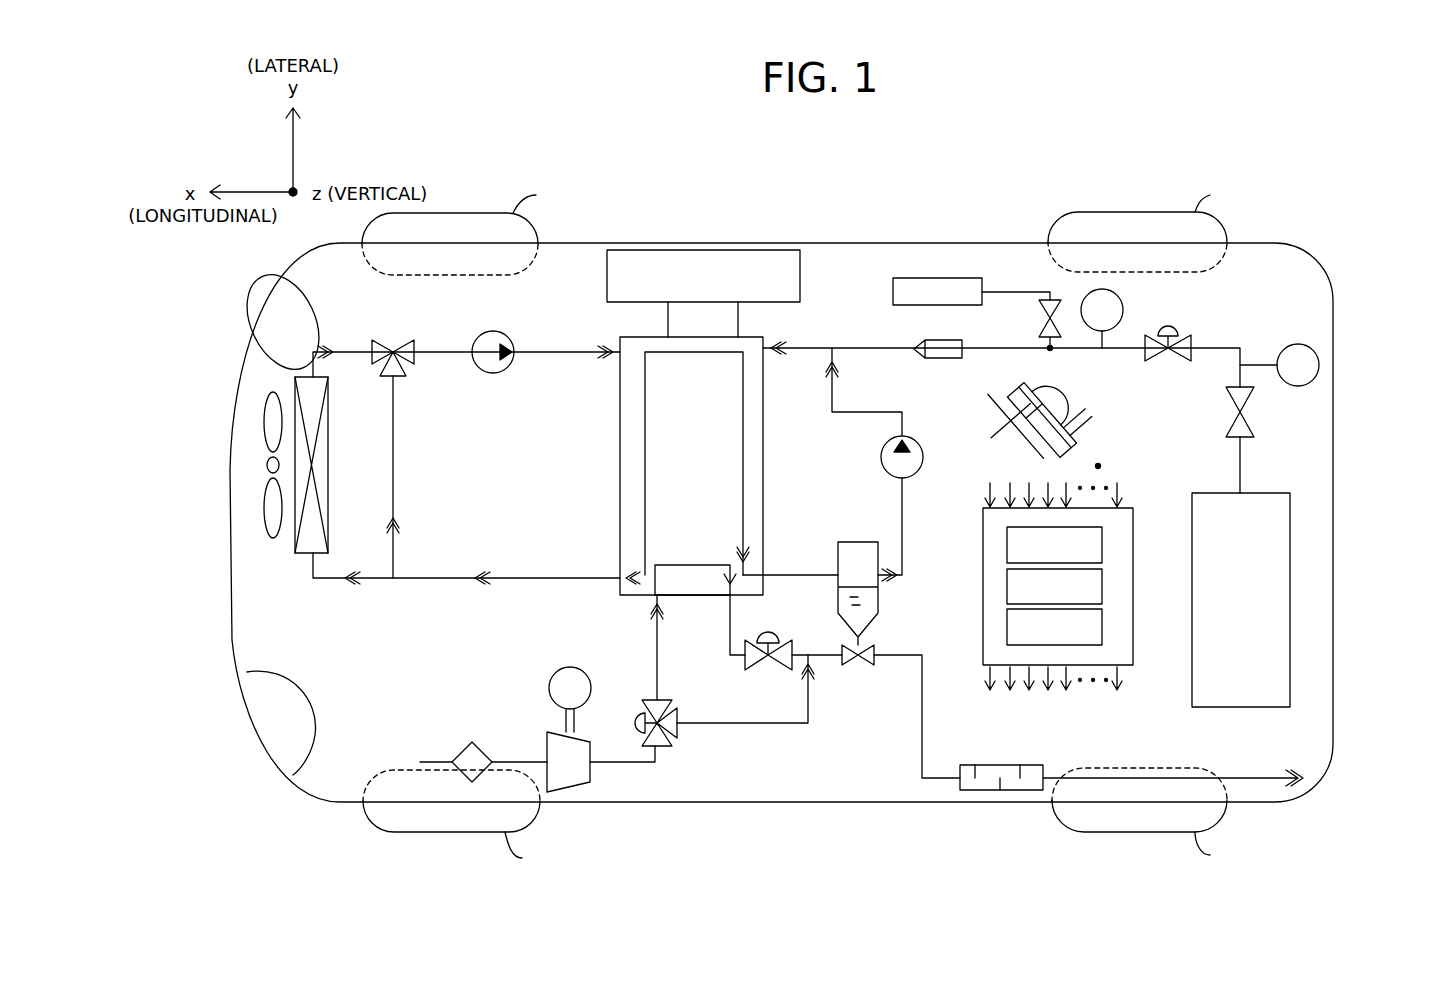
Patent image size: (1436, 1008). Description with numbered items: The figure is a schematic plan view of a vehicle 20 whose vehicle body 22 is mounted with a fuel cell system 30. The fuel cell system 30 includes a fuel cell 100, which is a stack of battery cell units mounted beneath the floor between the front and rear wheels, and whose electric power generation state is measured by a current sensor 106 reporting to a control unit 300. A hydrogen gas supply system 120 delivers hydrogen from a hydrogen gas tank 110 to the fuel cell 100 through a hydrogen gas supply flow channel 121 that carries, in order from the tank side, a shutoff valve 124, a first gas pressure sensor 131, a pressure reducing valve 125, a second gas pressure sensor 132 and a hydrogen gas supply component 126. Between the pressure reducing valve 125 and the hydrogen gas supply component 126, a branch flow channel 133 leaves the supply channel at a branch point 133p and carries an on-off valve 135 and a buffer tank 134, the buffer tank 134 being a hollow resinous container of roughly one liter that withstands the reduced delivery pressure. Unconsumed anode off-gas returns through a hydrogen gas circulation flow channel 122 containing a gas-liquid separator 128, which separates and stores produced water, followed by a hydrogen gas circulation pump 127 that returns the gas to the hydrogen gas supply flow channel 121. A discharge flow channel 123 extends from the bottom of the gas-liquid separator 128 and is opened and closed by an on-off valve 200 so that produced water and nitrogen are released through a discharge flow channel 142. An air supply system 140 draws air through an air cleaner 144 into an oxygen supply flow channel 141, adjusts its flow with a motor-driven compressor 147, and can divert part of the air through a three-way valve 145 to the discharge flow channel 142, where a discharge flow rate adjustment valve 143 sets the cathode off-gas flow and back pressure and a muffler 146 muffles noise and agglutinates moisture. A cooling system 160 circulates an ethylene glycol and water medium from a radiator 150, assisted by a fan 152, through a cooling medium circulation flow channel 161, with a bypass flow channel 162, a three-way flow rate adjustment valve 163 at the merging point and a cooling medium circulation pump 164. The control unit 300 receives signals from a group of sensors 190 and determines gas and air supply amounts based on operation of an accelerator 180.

The vehicle 20 is at (781, 515).
The vehicle body 22 is at (798, 243).
The fuel cell system 30 is at (821, 298).
The fuel cell 100 is at (768, 340).
The current sensor 106 is at (757, 250).
The hydrogen gas tank 110 is at (1246, 493).
The hydrogen gas supply system 120 is at (1327, 314).
The hydrogen gas supply flow channel 121 is at (900, 340).
The hydrogen gas circulation flow channel 122 is at (882, 560).
The discharge flow channel 123 is at (845, 650).
The shutoff valve 124 is at (1226, 412).
The pressure reducing valve 125 is at (1190, 346).
The hydrogen gas supply component 126 is at (935, 358).
The hydrogen gas circulation pump 127 is at (912, 478).
The gas-liquid separator 128 is at (843, 560).
The first gas pressure sensor 131 is at (1292, 387).
The second gas pressure sensor 132 is at (1115, 298).
The branch flow channel 133 is at (1020, 292).
The branch point 133p is at (1048, 349).
The buffer tank 134 is at (950, 278).
The on-off valve 135 is at (1042, 338).
The air supply system 140 is at (434, 689).
The oxygen supply flow channel 141 is at (432, 760).
The discharge flow channel 142 is at (912, 702).
The discharge flow rate adjustment valve 143 is at (738, 642).
The air cleaner 144 is at (462, 770).
The three-way valve 145 is at (660, 750).
The muffler 146 is at (985, 790).
The compressor 147 is at (505, 762).
The radiator 150 is at (296, 385).
The fan 152 is at (262, 448).
The cooling system 160 is at (554, 329).
The cooling medium circulation flow channel 161 is at (545, 582).
The bypass flow channel 162 is at (392, 470).
The three-way flow rate adjustment valve 163 is at (398, 345).
The cooling medium circulation pump 164 is at (493, 374).
The accelerator 180 is at (1017, 398).
The group of sensors 190 is at (1093, 475).
The on-off valve 200 is at (870, 652).
The control unit 300 is at (1125, 508).